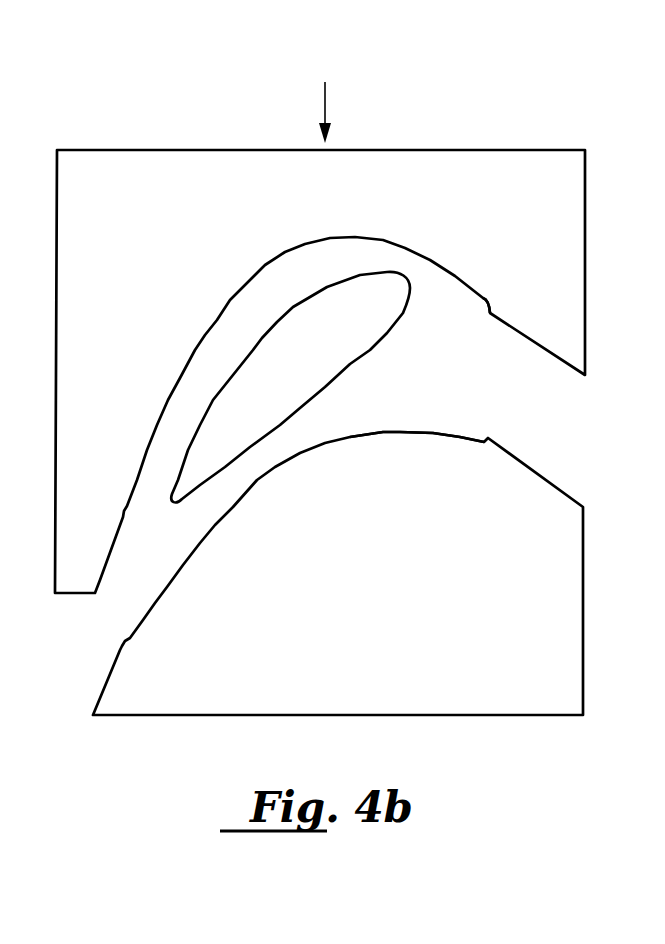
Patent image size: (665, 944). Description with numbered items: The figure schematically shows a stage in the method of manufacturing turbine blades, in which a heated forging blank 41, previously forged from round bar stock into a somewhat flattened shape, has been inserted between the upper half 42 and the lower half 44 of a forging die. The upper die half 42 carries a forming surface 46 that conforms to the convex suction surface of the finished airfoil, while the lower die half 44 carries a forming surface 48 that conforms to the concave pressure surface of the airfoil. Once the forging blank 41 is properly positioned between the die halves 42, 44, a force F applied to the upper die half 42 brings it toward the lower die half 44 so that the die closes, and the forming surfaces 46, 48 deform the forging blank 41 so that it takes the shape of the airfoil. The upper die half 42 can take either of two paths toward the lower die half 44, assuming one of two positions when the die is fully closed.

The upper half of forging die 42 is at (548, 150).
The lower half of forging die 44 is at (585, 643).
The forging blank 41 is at (377, 347).
The forming surface 46 is at (478, 297).
The forming surface 48 is at (435, 431).
The force F is at (326, 101).